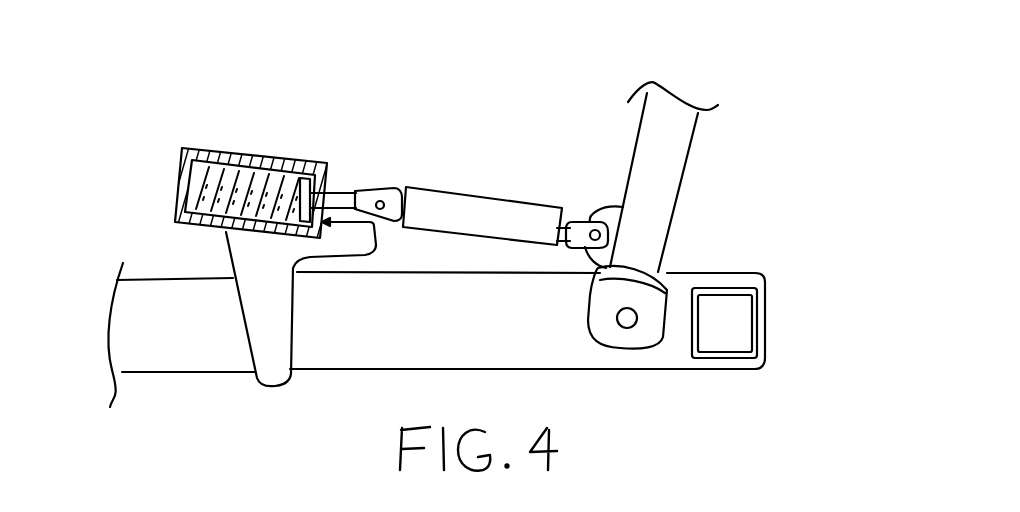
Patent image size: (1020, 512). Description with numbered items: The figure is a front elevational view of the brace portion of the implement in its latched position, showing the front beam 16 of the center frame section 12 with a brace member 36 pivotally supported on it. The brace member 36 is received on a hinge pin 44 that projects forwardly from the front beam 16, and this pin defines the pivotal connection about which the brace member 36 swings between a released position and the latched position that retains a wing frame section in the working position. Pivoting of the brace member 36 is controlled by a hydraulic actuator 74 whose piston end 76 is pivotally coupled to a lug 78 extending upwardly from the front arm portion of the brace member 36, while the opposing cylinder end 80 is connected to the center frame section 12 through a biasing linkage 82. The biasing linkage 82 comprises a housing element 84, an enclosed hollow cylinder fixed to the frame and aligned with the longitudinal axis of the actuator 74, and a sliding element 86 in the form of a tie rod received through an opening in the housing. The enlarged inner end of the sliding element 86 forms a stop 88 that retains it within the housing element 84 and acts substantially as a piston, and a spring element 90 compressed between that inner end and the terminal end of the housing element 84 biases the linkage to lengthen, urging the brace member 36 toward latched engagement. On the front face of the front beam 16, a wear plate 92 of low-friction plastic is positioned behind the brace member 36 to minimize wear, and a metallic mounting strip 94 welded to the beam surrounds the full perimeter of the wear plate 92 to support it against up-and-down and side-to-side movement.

The center frame section 12 is at (192, 374).
The front beam 16 is at (184, 356).
The brace member 36 is at (675, 148).
The hinge pin 44 is at (628, 328).
The hydraulic actuator 74 is at (478, 188).
The piston end 76 is at (590, 232).
The lug 78 is at (603, 210).
The cylinder end 80 is at (406, 189).
The biasing linkage 82 is at (258, 147).
The housing element 84 is at (184, 147).
The sliding element 86 is at (341, 192).
The stop 88 is at (303, 182).
The spring element 90 is at (215, 191).
The wear plate 92 is at (721, 334).
The mounting strip 94 is at (758, 338).